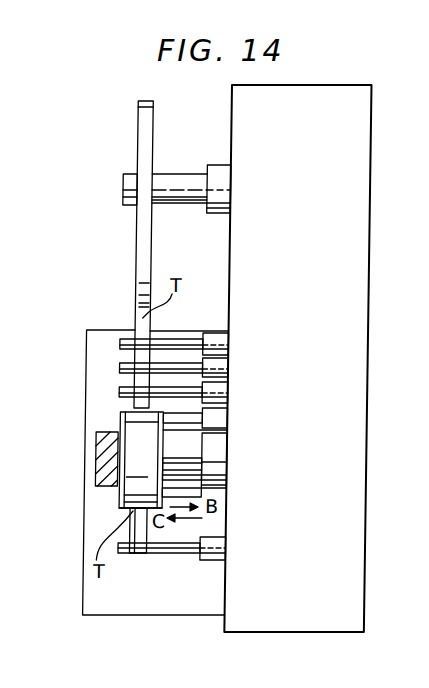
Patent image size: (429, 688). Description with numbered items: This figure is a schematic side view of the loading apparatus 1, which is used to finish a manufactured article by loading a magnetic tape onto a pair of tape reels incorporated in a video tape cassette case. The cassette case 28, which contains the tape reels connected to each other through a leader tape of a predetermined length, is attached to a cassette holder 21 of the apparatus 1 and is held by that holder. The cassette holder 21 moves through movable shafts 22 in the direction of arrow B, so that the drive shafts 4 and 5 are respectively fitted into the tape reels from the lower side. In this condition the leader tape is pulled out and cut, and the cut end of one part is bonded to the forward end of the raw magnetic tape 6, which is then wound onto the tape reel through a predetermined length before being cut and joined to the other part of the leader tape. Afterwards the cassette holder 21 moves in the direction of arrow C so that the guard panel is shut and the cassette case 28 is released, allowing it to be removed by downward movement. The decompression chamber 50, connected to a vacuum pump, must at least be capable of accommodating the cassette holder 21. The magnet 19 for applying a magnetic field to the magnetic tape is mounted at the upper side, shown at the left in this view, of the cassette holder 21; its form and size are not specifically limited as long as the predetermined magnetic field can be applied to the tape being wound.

The loading apparatus 1 is at (372, 162).
The raw magnetic tape 6 is at (142, 147).
The decompression chamber 50 is at (115, 330).
The movable shafts 22 is at (191, 488).
The drive shaft 4 is at (100, 460).
The drive shaft 5 is at (175, 457).
The magnet 19 is at (115, 432).
The cassette case 28 is at (136, 517).
The cassette holder 21 is at (120, 501).